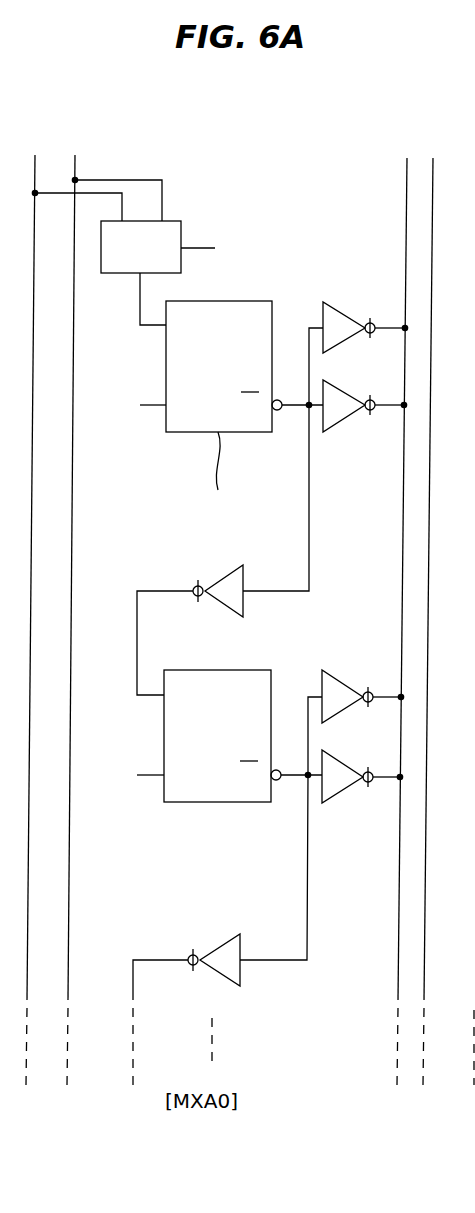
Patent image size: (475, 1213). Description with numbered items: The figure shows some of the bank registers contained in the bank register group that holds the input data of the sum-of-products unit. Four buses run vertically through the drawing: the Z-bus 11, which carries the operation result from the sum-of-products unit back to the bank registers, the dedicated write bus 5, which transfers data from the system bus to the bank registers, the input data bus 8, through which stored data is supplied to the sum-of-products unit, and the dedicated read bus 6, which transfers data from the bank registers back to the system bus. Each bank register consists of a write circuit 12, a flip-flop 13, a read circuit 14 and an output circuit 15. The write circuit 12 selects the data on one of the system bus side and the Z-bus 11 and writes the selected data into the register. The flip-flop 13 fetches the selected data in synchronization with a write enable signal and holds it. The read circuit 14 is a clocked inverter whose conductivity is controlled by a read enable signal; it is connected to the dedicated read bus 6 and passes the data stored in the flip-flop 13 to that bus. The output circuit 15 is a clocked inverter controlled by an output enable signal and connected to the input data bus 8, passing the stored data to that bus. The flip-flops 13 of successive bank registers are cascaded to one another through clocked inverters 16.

The Z-bus 11 is at (36, 157).
The dedicated write bus 5 is at (77, 163).
The input data bus 8 is at (407, 180).
The dedicated read bus 6 is at (433, 170).
The write circuit 12 is at (182, 221).
The flip-flop 13 is at (168, 432).
The read circuit 14 is at (323, 308).
The output circuit 15 is at (340, 421).
The clocked inverter 16 is at (244, 572).